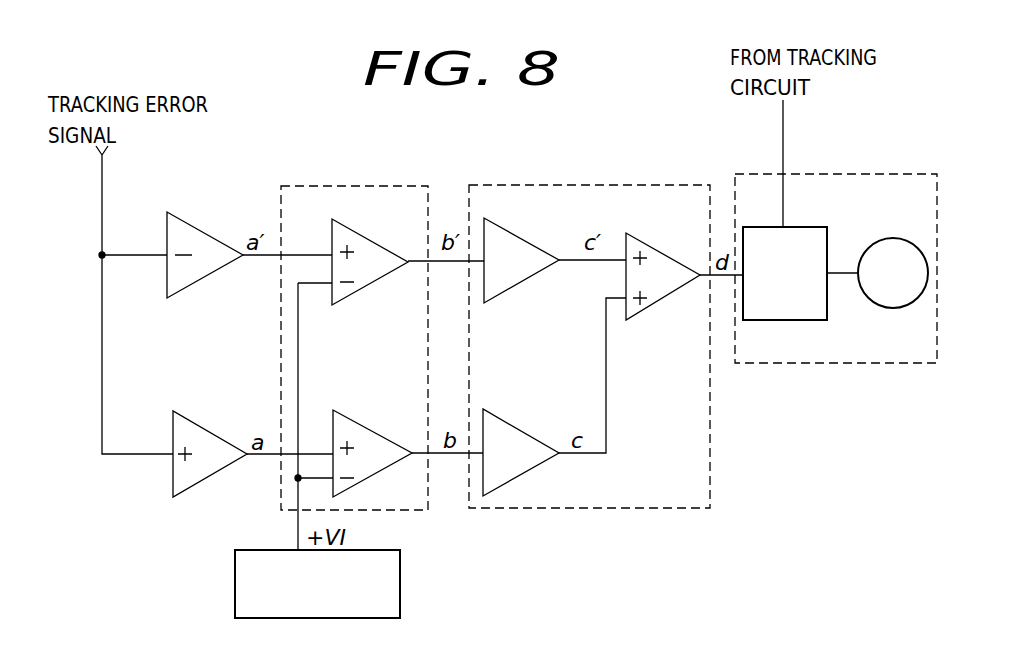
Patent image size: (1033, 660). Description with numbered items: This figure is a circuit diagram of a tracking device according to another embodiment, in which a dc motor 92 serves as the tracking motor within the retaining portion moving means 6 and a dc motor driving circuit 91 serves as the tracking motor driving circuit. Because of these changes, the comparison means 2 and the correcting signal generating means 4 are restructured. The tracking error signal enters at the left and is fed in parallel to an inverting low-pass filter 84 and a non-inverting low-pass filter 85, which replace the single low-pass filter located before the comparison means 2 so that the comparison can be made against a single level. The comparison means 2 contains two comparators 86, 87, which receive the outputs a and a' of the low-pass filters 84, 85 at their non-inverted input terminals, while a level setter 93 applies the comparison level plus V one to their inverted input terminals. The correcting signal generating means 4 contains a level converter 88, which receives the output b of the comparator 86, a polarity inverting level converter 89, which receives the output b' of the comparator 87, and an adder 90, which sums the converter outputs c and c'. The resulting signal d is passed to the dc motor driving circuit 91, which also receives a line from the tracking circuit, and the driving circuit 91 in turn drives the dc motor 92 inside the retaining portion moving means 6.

The comparison means 2 is at (360, 187).
The correcting signal generating means 4 is at (560, 186).
The retaining portion moving means 6 is at (828, 172).
The inverting low-pass filter 84 is at (212, 432).
The non-inverting low-pass filter 85 is at (202, 230).
The comparator 86 is at (377, 432).
The comparator 87 is at (380, 240).
The level converter 88 is at (528, 430).
The polarity inverting level converter 89 is at (535, 245).
The adder 90 is at (668, 248).
The dc motor driving circuit 91 is at (807, 228).
The dc motor 92 is at (898, 237).
The level setter 93 is at (400, 592).